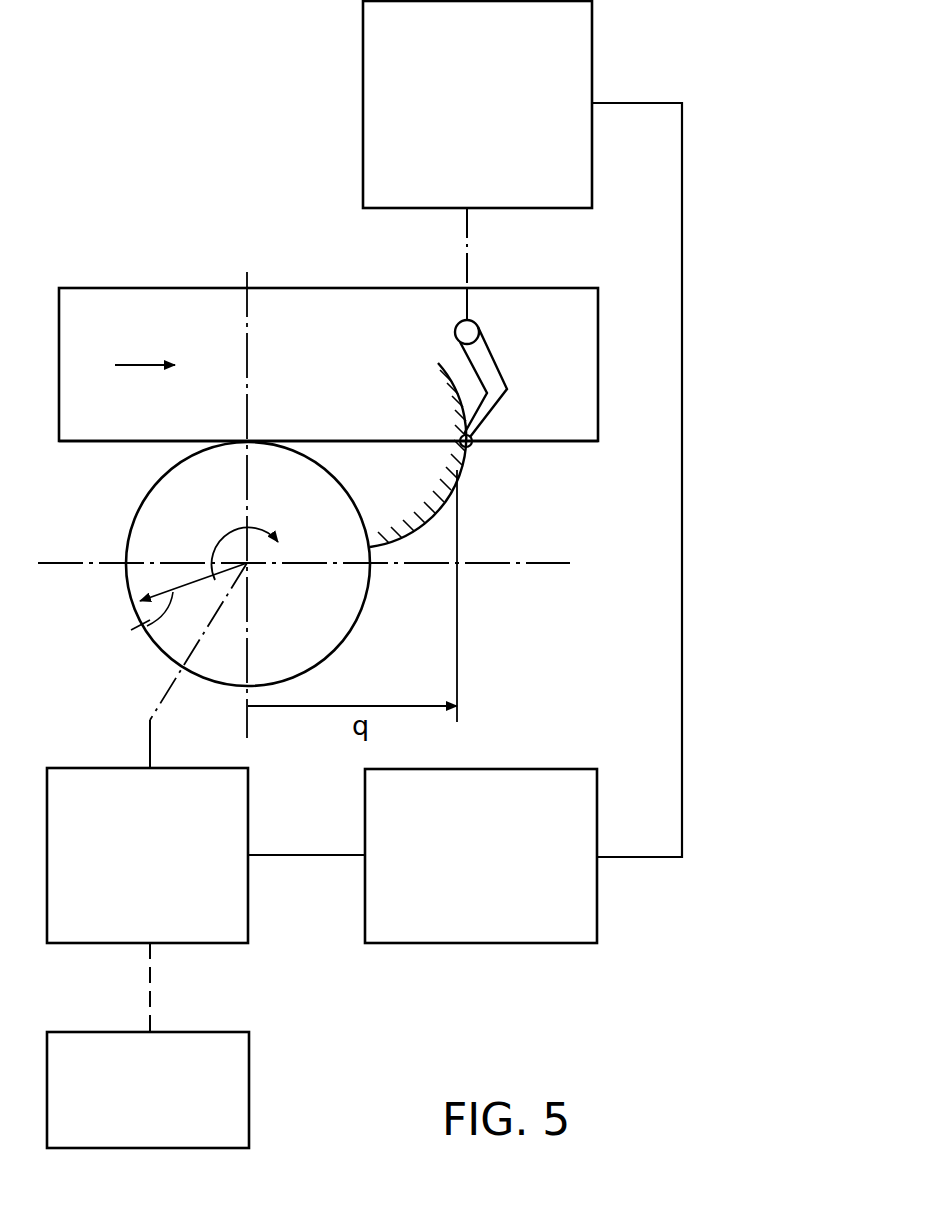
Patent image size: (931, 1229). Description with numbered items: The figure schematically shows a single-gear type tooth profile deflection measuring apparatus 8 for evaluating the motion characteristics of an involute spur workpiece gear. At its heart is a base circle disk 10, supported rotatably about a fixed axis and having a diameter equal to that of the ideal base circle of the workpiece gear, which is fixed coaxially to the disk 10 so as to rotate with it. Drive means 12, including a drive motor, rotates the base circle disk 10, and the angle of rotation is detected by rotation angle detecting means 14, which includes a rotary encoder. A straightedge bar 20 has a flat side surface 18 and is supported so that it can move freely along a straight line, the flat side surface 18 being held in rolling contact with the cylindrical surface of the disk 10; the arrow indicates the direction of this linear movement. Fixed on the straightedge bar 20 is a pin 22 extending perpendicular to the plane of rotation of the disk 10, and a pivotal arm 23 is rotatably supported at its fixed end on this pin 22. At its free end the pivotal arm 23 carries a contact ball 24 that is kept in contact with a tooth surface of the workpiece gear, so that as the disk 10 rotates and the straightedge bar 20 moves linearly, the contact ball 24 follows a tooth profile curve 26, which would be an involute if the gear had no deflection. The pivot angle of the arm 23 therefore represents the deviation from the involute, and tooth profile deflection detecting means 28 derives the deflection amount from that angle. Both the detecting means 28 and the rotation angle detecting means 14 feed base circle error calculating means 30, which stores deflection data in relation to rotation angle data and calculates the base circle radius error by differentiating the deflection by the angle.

The measuring apparatus 8 is at (710, 371).
The base circle disk 10 is at (183, 643).
The drive means 12 is at (205, 1135).
The rotation angle detecting means 14 is at (203, 930).
The flat side surface 18 is at (553, 442).
The straightedge bar 20 is at (187, 303).
The pin 22 is at (476, 323).
The pivotal arm 23 is at (485, 352).
The contact ball 24 is at (471, 448).
The tooth profile curve 26 is at (440, 503).
The tooth profile deflection detecting means 28 is at (585, 60).
The base circle error calculating means 30 is at (515, 930).